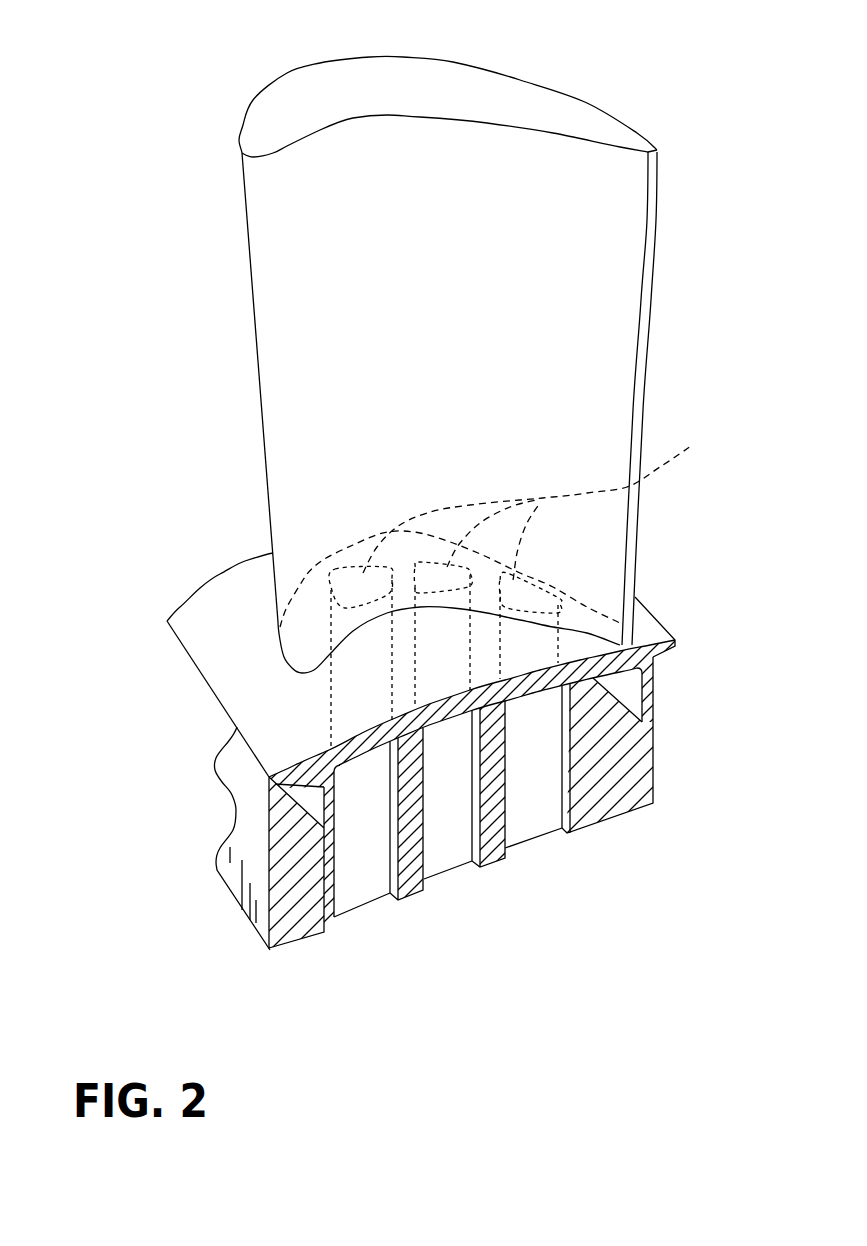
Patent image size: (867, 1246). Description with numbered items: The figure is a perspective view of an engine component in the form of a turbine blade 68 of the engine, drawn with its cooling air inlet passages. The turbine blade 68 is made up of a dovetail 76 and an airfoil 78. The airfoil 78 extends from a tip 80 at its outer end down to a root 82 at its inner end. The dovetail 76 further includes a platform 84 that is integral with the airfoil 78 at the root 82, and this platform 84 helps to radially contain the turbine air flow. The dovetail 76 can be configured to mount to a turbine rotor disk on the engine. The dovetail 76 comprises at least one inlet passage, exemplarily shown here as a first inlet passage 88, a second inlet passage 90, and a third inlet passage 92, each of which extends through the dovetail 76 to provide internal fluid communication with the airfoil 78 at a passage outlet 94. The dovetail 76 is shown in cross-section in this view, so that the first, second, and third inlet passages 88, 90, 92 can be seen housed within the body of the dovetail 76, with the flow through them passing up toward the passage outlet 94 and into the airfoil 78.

The turbine blade 68 is at (97, 157).
The dovetail 76 is at (247, 793).
The airfoil 78 is at (256, 438).
The tip 80 is at (333, 97).
The root 82 is at (583, 620).
The platform 84 is at (235, 658).
The first inlet passage 88 is at (369, 934).
The second inlet passage 90 is at (451, 909).
The third inlet passage 92 is at (536, 879).
The passage outlet 94 is at (503, 523).